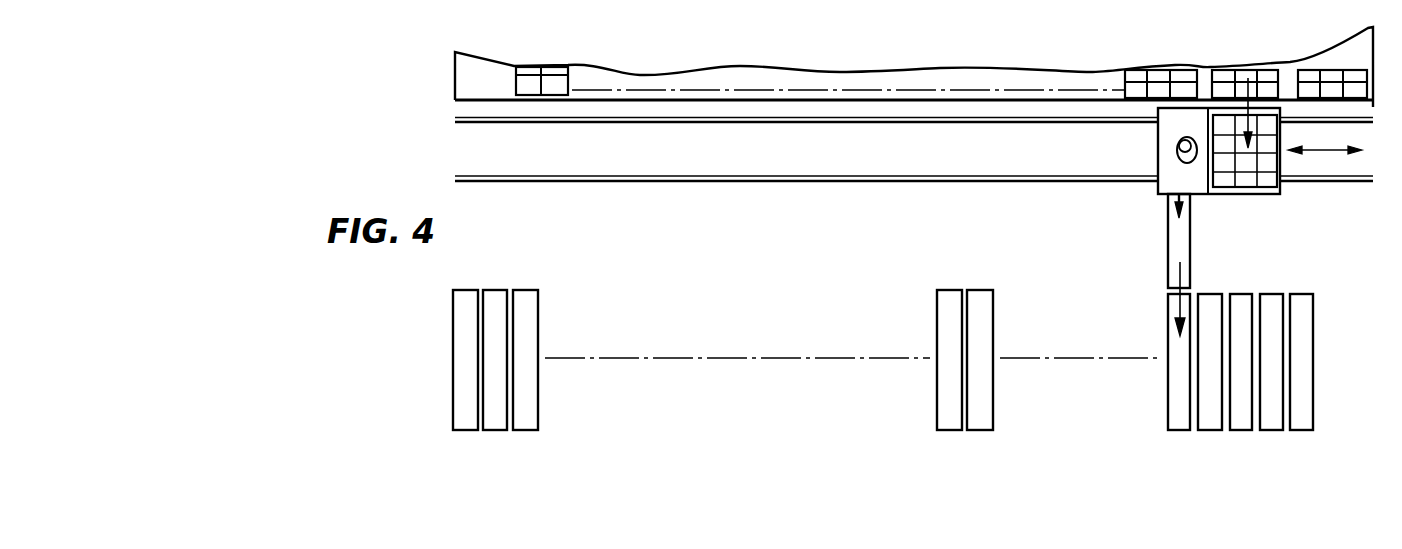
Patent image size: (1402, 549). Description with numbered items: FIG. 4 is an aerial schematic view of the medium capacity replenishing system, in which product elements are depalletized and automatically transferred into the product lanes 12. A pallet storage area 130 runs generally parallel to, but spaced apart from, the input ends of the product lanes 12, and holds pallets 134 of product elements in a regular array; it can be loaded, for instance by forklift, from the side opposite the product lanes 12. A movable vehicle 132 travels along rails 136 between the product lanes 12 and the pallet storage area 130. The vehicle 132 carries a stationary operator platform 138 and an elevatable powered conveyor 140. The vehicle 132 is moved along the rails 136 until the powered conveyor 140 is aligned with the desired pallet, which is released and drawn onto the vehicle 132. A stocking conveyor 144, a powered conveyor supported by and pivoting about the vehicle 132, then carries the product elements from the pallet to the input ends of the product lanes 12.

The product lanes 12 is at (533, 315).
The pallet storage area 130 is at (997, 82).
The movable vehicle 132 is at (1140, 137).
The pallets 134 is at (1337, 65).
The rails 136 is at (949, 122).
The stationary operator platform 138 is at (1175, 173).
The powered conveyor 140 is at (1275, 194).
The stocking conveyor 144 is at (1185, 242).